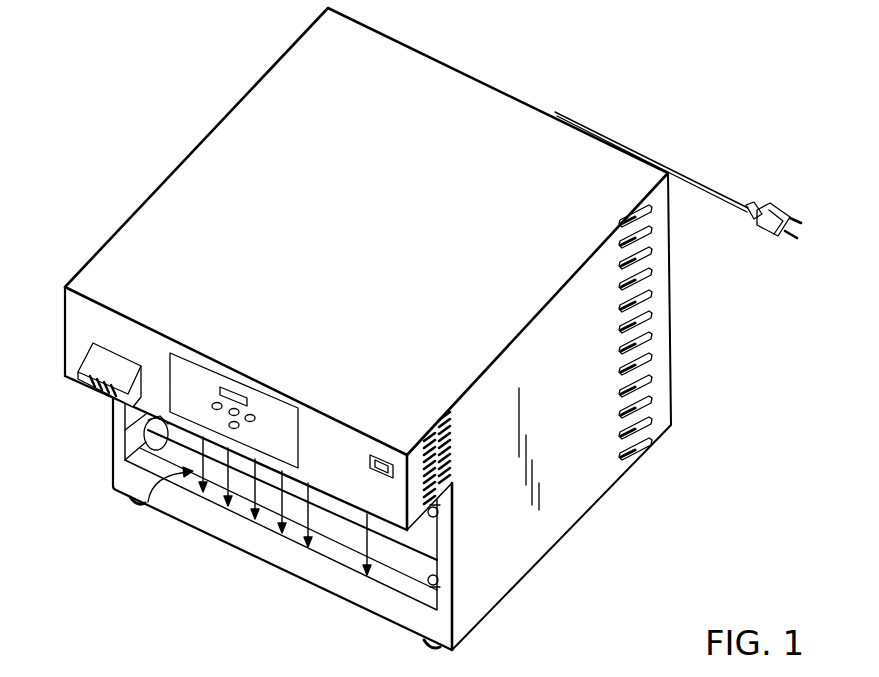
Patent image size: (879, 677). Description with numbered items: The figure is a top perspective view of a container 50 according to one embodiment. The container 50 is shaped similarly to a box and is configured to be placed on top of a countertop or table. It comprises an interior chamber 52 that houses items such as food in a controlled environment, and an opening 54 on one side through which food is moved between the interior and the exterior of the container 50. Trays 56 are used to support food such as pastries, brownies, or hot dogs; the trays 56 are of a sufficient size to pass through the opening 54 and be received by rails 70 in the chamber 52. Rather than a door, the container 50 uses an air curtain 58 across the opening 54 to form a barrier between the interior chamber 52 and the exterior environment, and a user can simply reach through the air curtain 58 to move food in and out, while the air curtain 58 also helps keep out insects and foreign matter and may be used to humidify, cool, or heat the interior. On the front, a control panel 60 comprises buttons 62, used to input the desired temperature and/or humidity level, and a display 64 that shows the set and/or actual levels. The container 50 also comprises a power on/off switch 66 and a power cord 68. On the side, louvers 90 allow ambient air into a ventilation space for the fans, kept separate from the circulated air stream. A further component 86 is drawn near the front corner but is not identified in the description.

The container 50 is at (161, 126).
The interior chamber 52 is at (410, 547).
The opening 54 is at (165, 510).
The trays 56 is at (345, 514).
The air curtain 58 is at (277, 509).
The control panel 60 is at (201, 387).
The buttons 62 is at (256, 421).
The display 64 is at (238, 391).
The power on/off switch 66 is at (383, 454).
The power cord 68 is at (656, 166).
The rails 70 is at (146, 440).
The crumb tray 86 is at (80, 378).
The louvers 90 is at (653, 343).